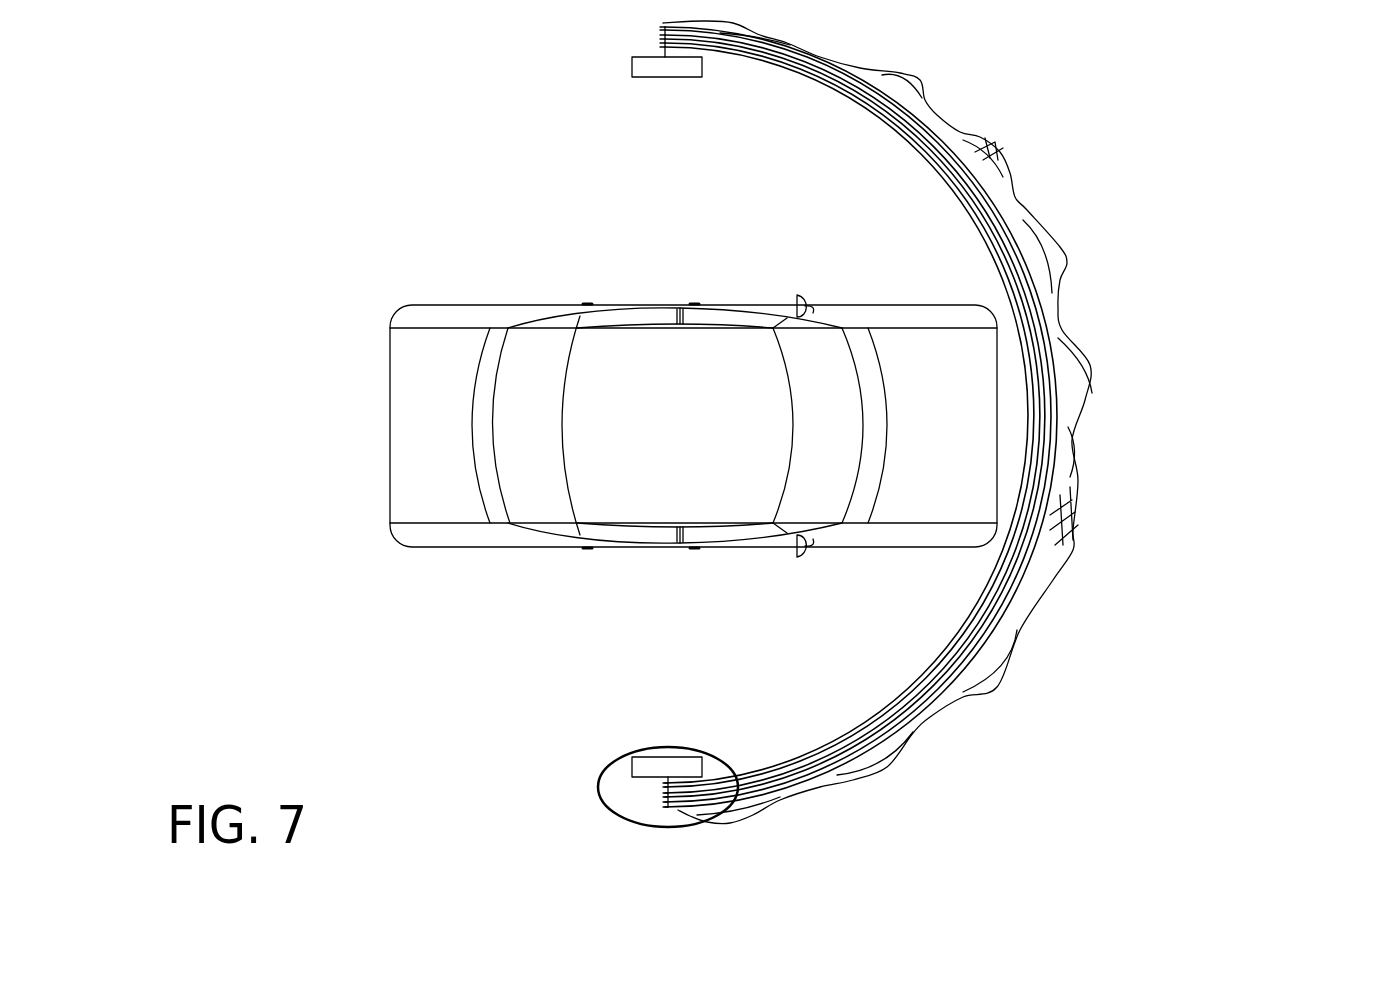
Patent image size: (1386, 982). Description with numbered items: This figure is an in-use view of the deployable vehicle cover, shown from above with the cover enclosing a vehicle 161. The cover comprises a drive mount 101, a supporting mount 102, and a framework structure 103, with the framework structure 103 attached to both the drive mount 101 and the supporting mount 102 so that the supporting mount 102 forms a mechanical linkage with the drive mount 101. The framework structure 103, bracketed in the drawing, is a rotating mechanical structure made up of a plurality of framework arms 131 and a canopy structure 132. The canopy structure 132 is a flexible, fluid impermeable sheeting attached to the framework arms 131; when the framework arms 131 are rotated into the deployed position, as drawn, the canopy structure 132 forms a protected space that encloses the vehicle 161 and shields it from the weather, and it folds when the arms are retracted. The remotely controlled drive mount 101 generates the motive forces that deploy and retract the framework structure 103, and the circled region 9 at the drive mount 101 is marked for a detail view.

The detail region / connector area 9 is at (668, 827).
The drive mount 101 is at (678, 767).
The supporting mount 102 is at (655, 77).
The framework structure 103 is at (1228, 295).
The plurality of framework arms 131 is at (1035, 397).
The canopy structure 132 is at (1067, 445).
The vehicle 161 is at (653, 352).